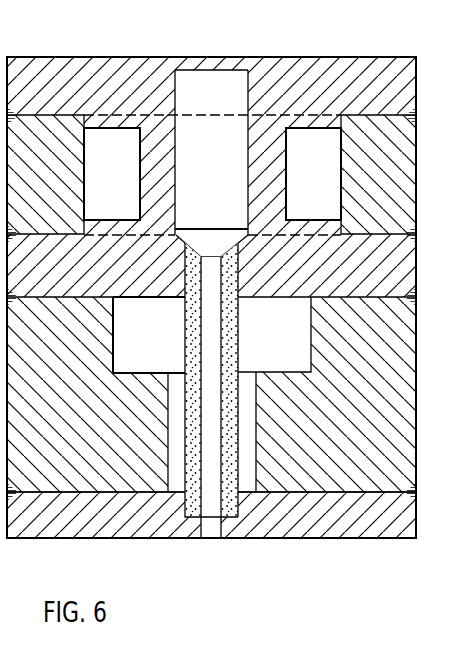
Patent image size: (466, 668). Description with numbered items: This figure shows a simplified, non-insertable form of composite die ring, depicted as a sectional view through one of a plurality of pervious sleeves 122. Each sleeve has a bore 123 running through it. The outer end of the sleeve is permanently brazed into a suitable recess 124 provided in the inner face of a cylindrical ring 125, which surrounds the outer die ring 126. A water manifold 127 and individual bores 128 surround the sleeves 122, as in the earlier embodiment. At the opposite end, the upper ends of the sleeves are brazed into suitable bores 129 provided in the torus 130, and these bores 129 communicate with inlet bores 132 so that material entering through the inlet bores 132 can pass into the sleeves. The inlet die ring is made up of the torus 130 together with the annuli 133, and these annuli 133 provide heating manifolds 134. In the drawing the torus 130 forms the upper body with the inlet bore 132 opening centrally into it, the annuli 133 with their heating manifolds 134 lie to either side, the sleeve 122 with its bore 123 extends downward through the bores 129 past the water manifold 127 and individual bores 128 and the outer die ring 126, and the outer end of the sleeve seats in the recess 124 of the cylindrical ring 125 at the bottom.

The sleeves 122 is at (228, 320).
The bore 123 is at (218, 345).
The recess 124 is at (145, 539).
The cylindrical ring 125 is at (308, 518).
The outer die ring 126 is at (378, 438).
The water manifold 127 is at (165, 328).
The individual bores 128 is at (177, 400).
The bores 129 is at (187, 272).
The torus 130 is at (313, 70).
The inlet bores 132 is at (245, 95).
The annuli 133 is at (60, 155).
The heating manifolds 134 is at (128, 188).